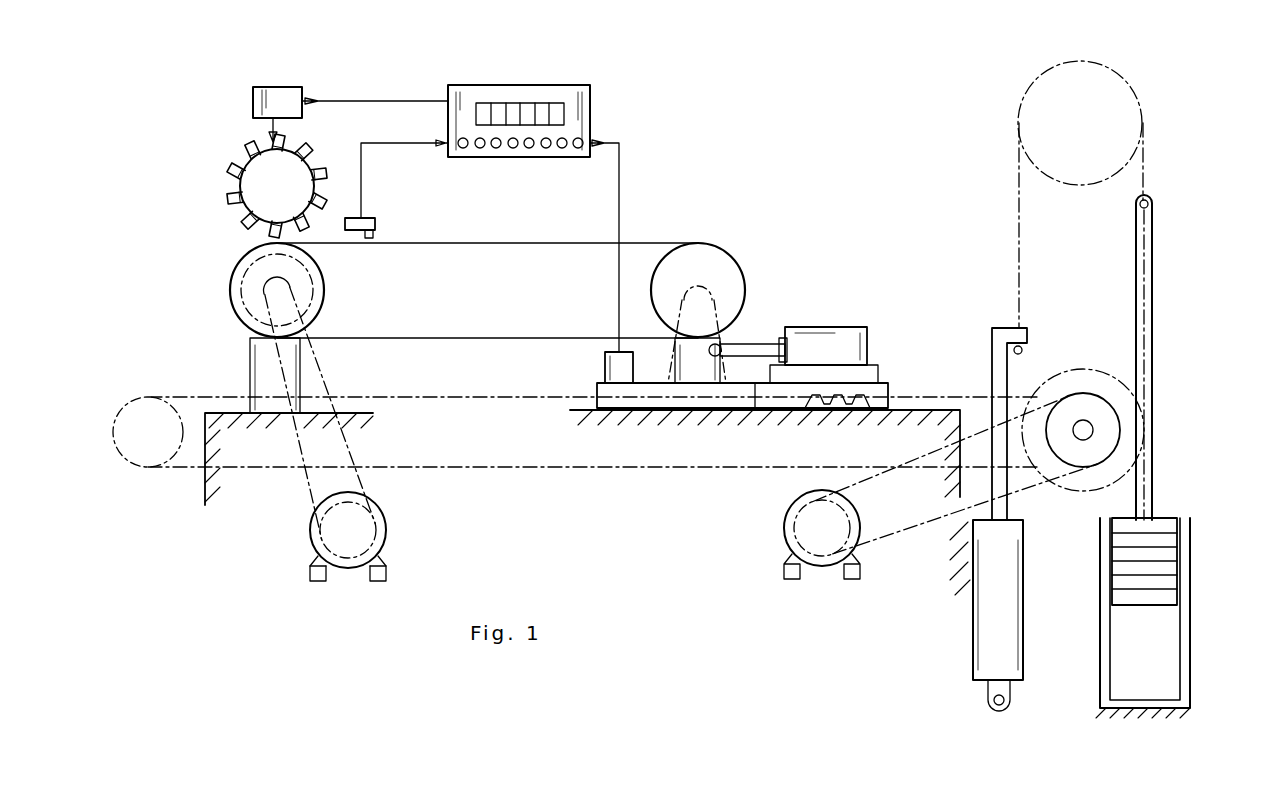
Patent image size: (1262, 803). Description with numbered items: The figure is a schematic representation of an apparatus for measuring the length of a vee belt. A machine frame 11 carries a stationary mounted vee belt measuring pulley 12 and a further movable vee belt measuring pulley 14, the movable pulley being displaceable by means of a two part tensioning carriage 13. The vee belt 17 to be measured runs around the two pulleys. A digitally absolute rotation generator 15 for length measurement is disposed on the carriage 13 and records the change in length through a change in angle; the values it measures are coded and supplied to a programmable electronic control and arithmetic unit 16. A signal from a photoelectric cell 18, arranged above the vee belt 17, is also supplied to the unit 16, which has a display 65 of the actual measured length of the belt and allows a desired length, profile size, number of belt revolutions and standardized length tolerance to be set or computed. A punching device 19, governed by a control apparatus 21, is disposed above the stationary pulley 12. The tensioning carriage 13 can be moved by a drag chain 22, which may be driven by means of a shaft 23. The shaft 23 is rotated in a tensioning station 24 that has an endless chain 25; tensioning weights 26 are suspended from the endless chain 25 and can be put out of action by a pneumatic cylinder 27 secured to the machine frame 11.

The machine frame 11 is at (205, 487).
The stationary mounted vee belt measuring pulley 12 is at (236, 298).
The two part tensioning carriage 13 is at (756, 305).
The movable vee belt measuring pulley 14 is at (718, 258).
The digitally absolute rotation generator 15 is at (612, 365).
The control and arithmetic unit 16 is at (492, 190).
The vee belt 17 is at (398, 245).
The photoelectric cell 18 is at (375, 222).
The punching device 19 is at (238, 185).
The control apparatus 21 is at (278, 94).
The drag chain 22 is at (930, 392).
The shaft 23 is at (1092, 428).
The tensioning station 24 is at (1198, 242).
The endless chain 25 is at (1019, 200).
The tensioning weights 26 is at (1165, 573).
The pneumatic cylinder 27 is at (1003, 625).
The display 65 is at (527, 108).